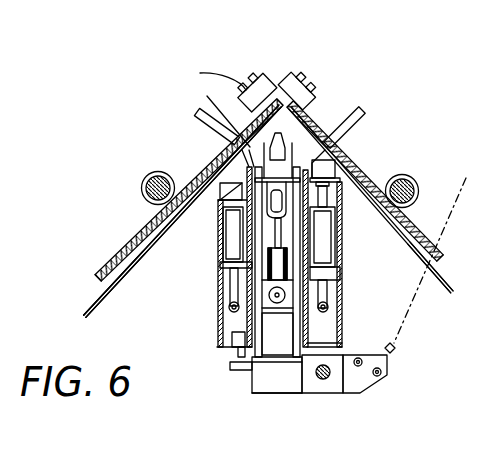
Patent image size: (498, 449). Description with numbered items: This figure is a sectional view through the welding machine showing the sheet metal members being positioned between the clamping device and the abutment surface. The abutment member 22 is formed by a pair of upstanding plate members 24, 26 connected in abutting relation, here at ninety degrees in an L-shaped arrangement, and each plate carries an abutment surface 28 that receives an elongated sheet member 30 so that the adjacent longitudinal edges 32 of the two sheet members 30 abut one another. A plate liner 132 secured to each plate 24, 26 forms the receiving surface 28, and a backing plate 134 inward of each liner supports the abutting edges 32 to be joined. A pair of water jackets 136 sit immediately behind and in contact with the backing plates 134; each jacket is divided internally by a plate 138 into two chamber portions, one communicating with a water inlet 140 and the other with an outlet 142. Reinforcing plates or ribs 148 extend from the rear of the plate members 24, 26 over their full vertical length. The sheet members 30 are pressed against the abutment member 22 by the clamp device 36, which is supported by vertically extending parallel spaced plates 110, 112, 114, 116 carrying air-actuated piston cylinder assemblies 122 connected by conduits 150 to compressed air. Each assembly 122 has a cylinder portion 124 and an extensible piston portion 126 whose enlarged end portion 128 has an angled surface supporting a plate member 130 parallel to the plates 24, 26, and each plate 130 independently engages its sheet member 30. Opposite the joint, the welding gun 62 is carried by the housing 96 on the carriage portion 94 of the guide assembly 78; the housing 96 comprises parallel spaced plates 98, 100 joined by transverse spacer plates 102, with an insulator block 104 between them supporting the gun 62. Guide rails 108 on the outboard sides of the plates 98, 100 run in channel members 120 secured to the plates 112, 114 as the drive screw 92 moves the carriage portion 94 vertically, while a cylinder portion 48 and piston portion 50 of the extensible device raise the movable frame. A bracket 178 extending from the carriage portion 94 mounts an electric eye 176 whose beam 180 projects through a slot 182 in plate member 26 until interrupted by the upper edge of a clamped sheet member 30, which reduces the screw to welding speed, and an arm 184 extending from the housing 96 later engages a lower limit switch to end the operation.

The abutment member 22 is at (70, 186).
The plate member 24 is at (107, 267).
The plate member 26 is at (408, 226).
The abutment surface 28 is at (145, 258).
The sheet member 30 is at (91, 302).
The longitudinal edge 32 is at (279, 93).
The clamp device 36 is at (204, 270).
The cylinder portion 48 is at (143, 193).
The piston portion 50 is at (148, 183).
The welding gun 62 is at (309, 117).
The guide assembly 78 is at (280, 402).
The drive screw 92 is at (322, 382).
The carriage portion 94 is at (333, 394).
The housing 96 is at (253, 380).
The plate 98 is at (232, 333).
The plate 100 is at (300, 321).
The transverse spacer plate 102 is at (273, 314).
The insulator block 104 is at (230, 231).
The guide rail 108 is at (303, 257).
The plate 110 is at (232, 343).
The plate 112 is at (256, 322).
The plate 114 is at (310, 337).
The plate 116 is at (345, 288).
The channel member 120 is at (246, 258).
The piston cylinder assembly 122 is at (206, 222).
The cylinder portion 124 is at (228, 229).
The piston portion 126 is at (202, 190).
The enlarged end portion 128 is at (196, 114).
The plate member 130 is at (212, 115).
The plate liner 132 is at (115, 256).
The backing plate 134 is at (208, 76).
The water jacket 136 is at (281, 97).
The plate 138 is at (262, 96).
The water inlet 140 is at (252, 76).
The outlet 142 is at (243, 86).
The reinforcing plate 148 is at (360, 123).
The conduit 150 is at (217, 277).
The electric eye 176 is at (395, 350).
The bracket 178 is at (380, 384).
The beam 180 is at (440, 250).
The slot 182 is at (440, 262).
The arm 184 is at (230, 367).